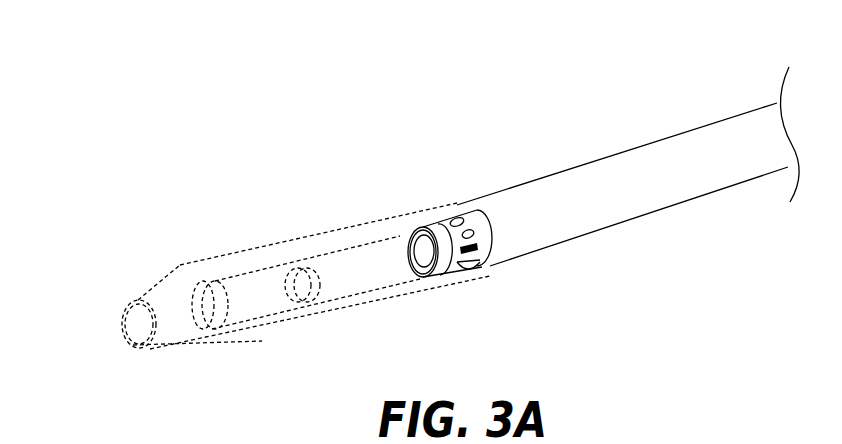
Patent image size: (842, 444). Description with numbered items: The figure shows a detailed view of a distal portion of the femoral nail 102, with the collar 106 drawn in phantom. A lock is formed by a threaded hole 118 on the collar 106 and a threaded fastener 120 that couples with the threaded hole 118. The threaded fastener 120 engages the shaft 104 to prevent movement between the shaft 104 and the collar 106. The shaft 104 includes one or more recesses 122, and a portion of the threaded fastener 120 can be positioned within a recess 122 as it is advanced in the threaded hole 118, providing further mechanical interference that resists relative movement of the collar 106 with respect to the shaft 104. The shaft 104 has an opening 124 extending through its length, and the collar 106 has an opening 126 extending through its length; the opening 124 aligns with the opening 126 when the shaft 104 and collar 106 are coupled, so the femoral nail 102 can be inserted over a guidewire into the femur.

The femoral nail 102 is at (268, 66).
The shaft 104 is at (627, 150).
The collar 106 is at (225, 254).
The threaded hole 118 is at (457, 264).
The threaded fastener 120 is at (483, 267).
The recess 122 is at (453, 212).
The opening 124 is at (422, 249).
The opening 126 is at (133, 330).